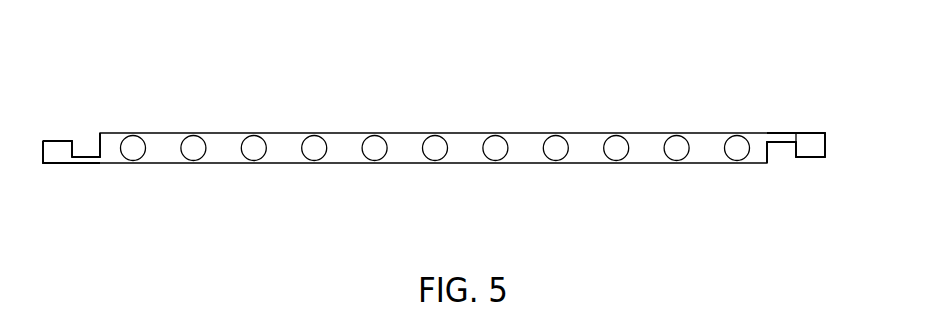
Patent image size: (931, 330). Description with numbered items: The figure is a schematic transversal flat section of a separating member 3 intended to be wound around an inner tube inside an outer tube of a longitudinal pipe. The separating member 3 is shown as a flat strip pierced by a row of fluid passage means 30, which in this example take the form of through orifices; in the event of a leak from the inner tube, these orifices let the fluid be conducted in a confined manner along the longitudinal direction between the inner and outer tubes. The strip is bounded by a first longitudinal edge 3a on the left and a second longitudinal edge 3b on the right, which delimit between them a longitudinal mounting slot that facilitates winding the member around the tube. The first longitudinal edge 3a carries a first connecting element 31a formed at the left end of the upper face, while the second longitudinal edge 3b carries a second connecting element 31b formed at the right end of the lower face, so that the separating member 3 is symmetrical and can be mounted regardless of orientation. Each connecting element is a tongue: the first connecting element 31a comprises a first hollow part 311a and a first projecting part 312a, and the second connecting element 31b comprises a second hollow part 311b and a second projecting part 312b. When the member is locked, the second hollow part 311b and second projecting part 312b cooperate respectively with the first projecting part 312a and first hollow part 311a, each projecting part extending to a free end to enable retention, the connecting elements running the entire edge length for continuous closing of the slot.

The separating member 3 is at (368, 85).
The fluid passage means 30 is at (377, 161).
The first longitudinal edge 3a is at (43, 150).
The second longitudinal edge 3b is at (825, 145).
The first connecting element 31a is at (115, 98).
The second connecting element 31b is at (752, 203).
The first hollow part 311a is at (88, 156).
The second hollow part 311b is at (781, 145).
The first projecting part 312a is at (59, 141).
The second projecting part 312b is at (812, 157).